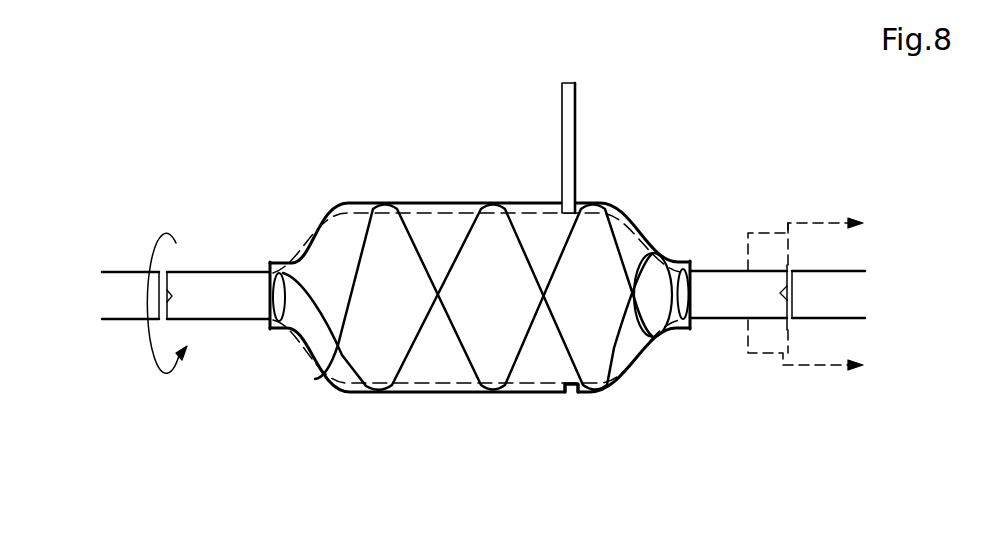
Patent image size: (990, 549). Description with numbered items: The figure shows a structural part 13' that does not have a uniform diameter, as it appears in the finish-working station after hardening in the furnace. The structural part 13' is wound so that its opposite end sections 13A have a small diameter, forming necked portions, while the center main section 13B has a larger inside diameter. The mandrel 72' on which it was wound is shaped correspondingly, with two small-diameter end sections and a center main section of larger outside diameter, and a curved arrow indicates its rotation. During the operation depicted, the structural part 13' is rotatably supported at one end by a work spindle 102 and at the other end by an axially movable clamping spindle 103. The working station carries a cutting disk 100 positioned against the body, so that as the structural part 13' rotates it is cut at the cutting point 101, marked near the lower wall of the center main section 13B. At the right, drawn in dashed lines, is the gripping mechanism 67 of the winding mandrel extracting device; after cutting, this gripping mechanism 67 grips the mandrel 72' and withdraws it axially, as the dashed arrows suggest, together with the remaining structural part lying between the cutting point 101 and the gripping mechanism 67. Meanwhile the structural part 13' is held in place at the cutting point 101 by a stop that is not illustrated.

The center main section 13B is at (468, 393).
The structural part 13' is at (477, 333).
The end sections 13A is at (271, 331).
The cutting disk 100 is at (567, 128).
The cutting point 101 is at (573, 396).
The work spindle 102 is at (113, 318).
The clamping spindle 103 is at (846, 319).
The gripping mechanism 67 is at (763, 340).
The mandrel 72' is at (181, 303).